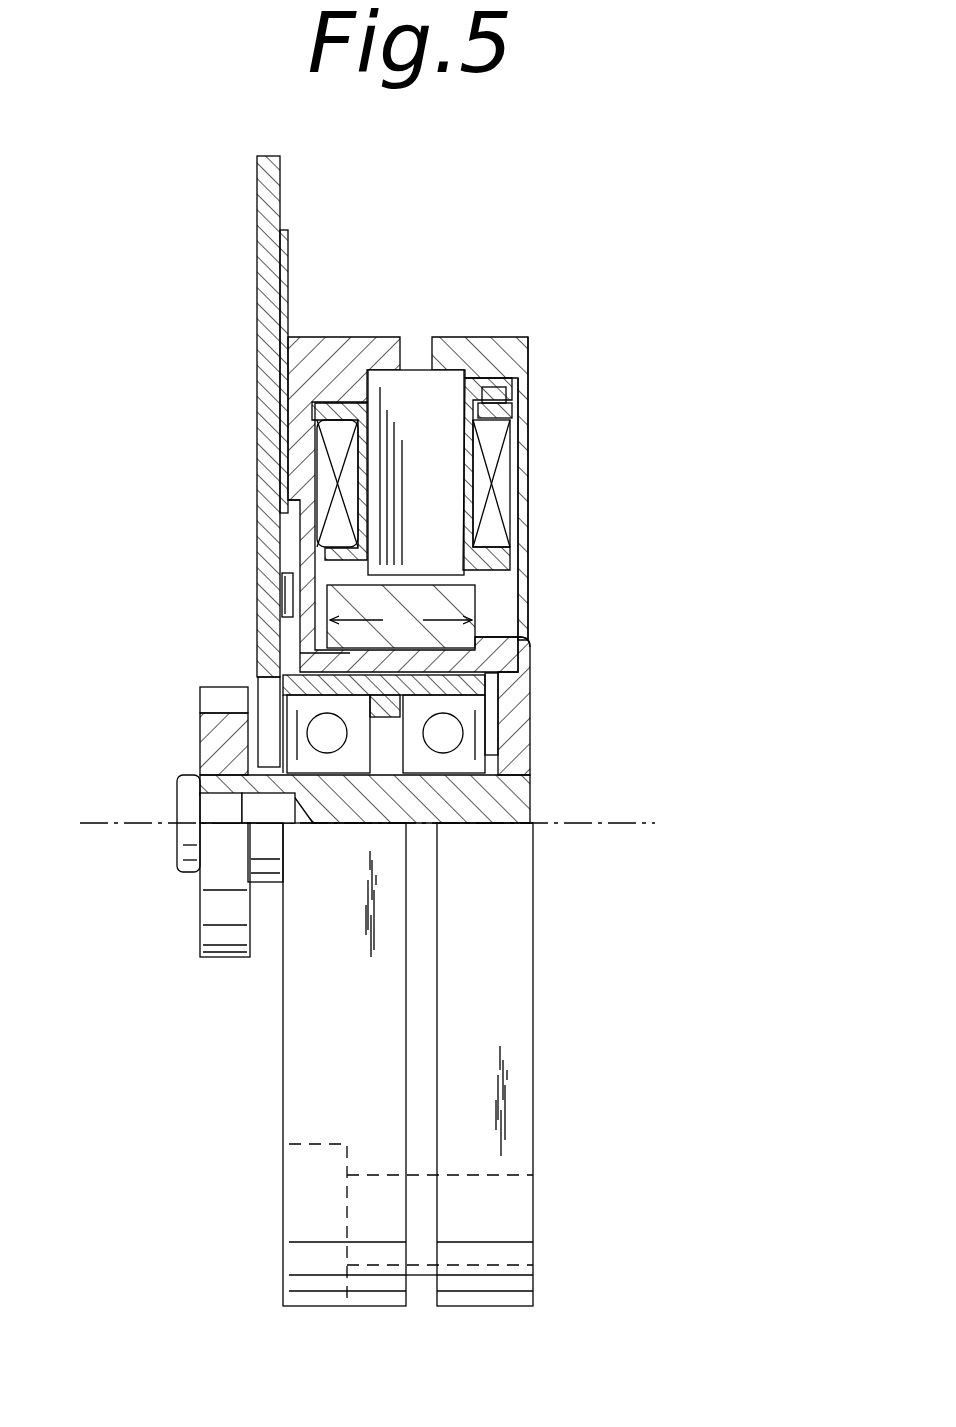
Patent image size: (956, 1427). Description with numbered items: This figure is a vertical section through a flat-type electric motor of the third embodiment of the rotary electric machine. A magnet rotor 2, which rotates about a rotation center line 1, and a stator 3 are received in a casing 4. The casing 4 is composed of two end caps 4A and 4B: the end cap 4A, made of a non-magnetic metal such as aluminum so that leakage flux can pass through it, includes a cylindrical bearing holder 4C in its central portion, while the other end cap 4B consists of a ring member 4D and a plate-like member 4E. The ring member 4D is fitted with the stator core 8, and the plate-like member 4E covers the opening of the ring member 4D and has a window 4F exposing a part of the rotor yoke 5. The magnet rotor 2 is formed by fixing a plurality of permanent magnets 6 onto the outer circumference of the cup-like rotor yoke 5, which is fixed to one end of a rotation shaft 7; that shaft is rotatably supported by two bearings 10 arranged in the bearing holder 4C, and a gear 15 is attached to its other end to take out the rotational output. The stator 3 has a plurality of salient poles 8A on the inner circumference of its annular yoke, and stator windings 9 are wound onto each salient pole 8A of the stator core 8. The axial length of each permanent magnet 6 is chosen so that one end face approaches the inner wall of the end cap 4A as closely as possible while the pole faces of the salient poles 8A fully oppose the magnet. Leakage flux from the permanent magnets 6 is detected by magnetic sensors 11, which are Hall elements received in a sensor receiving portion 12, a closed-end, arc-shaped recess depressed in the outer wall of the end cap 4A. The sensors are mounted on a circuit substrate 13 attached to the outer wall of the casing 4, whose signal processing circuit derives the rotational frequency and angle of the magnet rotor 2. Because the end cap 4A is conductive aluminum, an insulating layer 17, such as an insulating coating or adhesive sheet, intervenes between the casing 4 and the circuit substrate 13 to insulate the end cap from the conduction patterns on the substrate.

The rotation center line 1 is at (110, 824).
The magnet rotor 2 is at (497, 618).
The stator 3 is at (522, 383).
The casing 4 is at (436, 464).
The end cap 4A is at (302, 340).
The end cap 4B is at (478, 333).
The bearing holder 4C is at (292, 690).
The ring member 4D is at (518, 337).
The plate-like member 4E is at (522, 404).
The window 4F is at (528, 640).
The rotor yoke 5 is at (523, 692).
The permanent magnet 6 is at (462, 600).
The rotation shaft 7 is at (510, 815).
The stator core 8 is at (491, 421).
The salient pole 8A is at (443, 518).
The stator winding 9 is at (500, 467).
The bearing 10 is at (295, 703).
The magnetic sensor 11 is at (283, 593).
The sensor receiving portion 12 is at (287, 528).
The circuit substrate 13 is at (262, 197).
The gear 15 is at (205, 702).
The insulating layer 17 is at (283, 231).